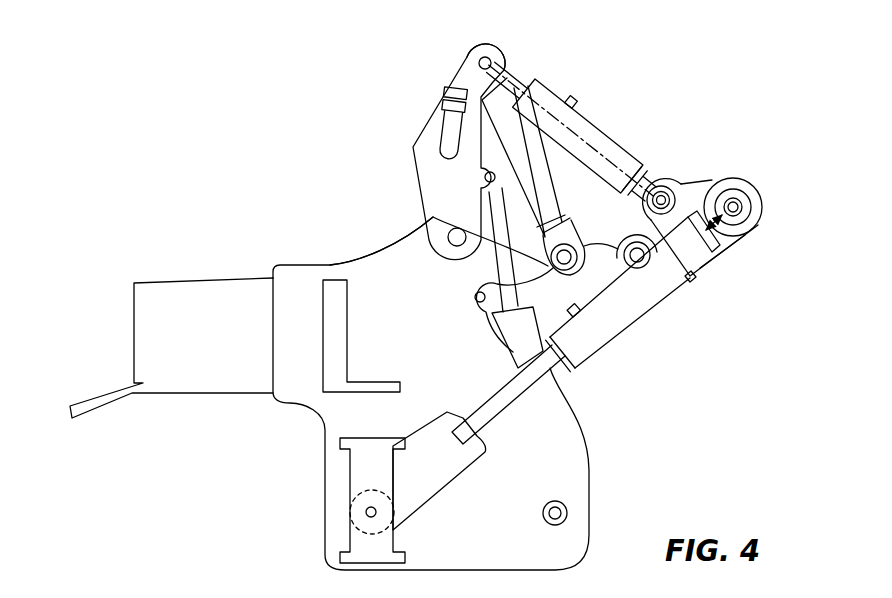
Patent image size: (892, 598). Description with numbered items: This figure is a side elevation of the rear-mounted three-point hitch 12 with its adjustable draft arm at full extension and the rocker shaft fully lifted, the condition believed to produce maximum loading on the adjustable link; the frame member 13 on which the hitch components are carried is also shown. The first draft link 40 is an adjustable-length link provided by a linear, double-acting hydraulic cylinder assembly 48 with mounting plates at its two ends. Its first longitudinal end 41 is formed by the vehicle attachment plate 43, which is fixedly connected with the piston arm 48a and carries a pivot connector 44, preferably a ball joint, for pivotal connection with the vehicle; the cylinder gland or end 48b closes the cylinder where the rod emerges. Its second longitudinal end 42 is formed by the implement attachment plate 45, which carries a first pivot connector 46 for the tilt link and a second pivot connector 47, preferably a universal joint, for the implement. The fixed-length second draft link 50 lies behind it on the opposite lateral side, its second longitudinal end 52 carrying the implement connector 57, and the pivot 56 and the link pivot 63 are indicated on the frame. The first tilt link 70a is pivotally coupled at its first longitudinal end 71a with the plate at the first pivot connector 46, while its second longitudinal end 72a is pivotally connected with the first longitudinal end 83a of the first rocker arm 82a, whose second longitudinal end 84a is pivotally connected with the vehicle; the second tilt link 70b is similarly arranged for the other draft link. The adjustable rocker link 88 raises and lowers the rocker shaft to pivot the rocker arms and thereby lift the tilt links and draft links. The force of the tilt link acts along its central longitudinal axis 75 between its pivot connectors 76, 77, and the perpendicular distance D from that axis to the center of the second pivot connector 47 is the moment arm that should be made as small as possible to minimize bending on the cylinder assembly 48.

The three-point hitch 12 is at (676, 398).
The mounting bracket 13 is at (314, 352).
The first draft link 40 is at (491, 403).
The first longitudinal end 41 is at (367, 512).
The second longitudinal end 42 is at (734, 212).
The vehicle attachment plate 43 is at (443, 472).
The pivot connector 44 is at (352, 492).
The implement attachment plate 45 is at (723, 238).
The first pivot connector 46 is at (678, 190).
The second pivot connector 47 is at (742, 208).
The hydraulic cylinder assembly 48 is at (618, 313).
The piston arm 48a is at (500, 399).
The cylinder end gland 48b is at (623, 331).
The second draft link 50 is at (560, 324).
The second longitudinal end 52 is at (692, 280).
The frame mount 56 is at (381, 234).
The connector 57 is at (620, 250).
The pivot link 63 is at (474, 295).
The first tilt link 70a is at (609, 126).
The second tilt link 70b is at (491, 129).
The first longitudinal end 71a is at (662, 186).
The second longitudinal end 72a is at (516, 72).
The central longitudinal axis 75 is at (589, 130).
The pivot connector 76 is at (684, 187).
The pivot connector 77 is at (492, 56).
The first rocker arm 82a is at (443, 160).
The first longitudinal end 83a is at (473, 63).
The second longitudinal end 84a is at (447, 254).
The rocker link 88 is at (499, 343).